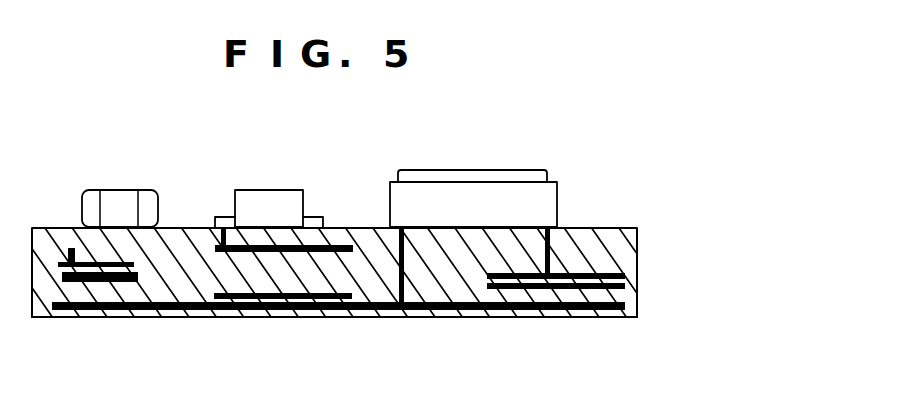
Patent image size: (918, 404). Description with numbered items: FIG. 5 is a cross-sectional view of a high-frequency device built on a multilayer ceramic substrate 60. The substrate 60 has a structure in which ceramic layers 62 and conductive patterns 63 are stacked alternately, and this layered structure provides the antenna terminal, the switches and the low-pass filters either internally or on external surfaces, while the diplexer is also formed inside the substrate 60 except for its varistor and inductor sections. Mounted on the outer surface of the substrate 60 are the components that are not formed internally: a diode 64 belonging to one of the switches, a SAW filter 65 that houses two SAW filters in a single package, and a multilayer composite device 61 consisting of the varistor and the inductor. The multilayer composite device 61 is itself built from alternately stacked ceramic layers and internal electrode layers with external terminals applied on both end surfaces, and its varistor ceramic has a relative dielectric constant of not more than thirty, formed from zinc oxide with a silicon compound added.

The multilayer ceramic substrate 60 is at (637, 238).
The multilayer composite device 61 is at (118, 202).
The ceramic layer 62 is at (635, 316).
The conductive pattern 63 is at (610, 312).
The diode 64 is at (277, 200).
The SAW filter 65 is at (498, 192).